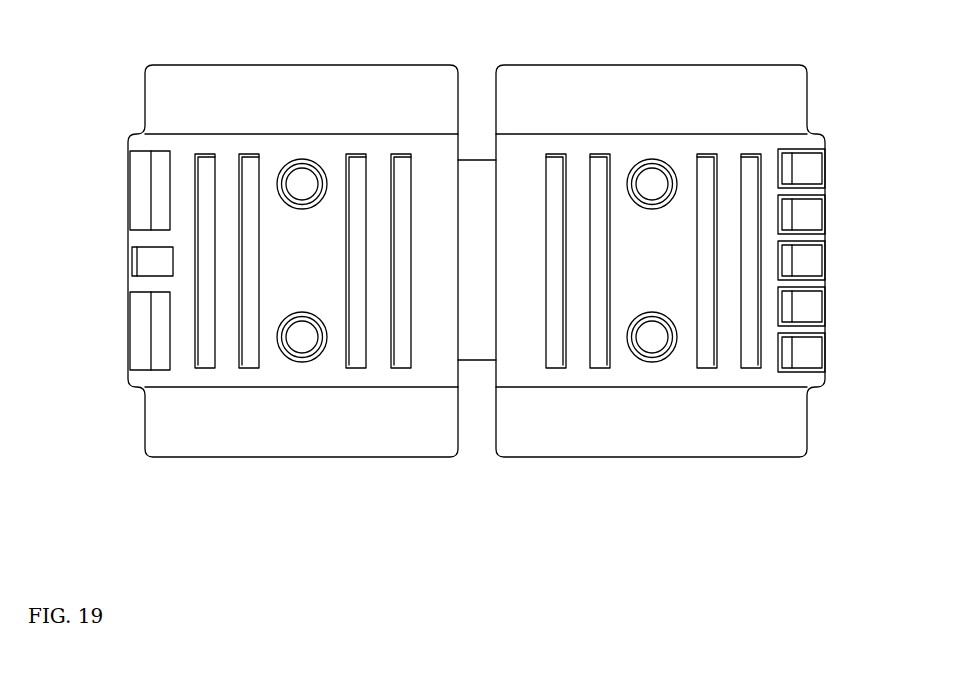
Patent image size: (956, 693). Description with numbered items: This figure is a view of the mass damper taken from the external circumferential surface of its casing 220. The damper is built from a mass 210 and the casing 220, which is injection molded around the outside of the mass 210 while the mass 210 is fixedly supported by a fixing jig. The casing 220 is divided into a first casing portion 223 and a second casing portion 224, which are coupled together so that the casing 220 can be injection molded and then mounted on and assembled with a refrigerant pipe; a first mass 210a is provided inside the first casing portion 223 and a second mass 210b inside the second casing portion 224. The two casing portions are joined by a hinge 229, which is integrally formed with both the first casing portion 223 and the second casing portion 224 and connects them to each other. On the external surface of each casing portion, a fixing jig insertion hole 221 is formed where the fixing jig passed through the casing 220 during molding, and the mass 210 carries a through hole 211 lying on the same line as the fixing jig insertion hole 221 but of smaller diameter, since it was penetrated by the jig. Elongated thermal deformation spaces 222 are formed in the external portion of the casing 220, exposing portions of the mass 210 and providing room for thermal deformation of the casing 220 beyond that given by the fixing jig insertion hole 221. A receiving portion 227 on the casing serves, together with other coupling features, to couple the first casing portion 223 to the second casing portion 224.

The mass 210 is at (476, 244).
The first mass 210a is at (674, 178).
The second mass 210b is at (282, 178).
The through hole 211 is at (302, 174).
The casing 220 is at (558, 518).
The fixing jig insertion hole 221 is at (320, 195).
The thermal deformation space 222 is at (251, 366).
The first casing portion 223 is at (537, 443).
The second casing portion 224 is at (418, 443).
The receiving portion 227 is at (160, 190).
The hinge 229 is at (471, 170).